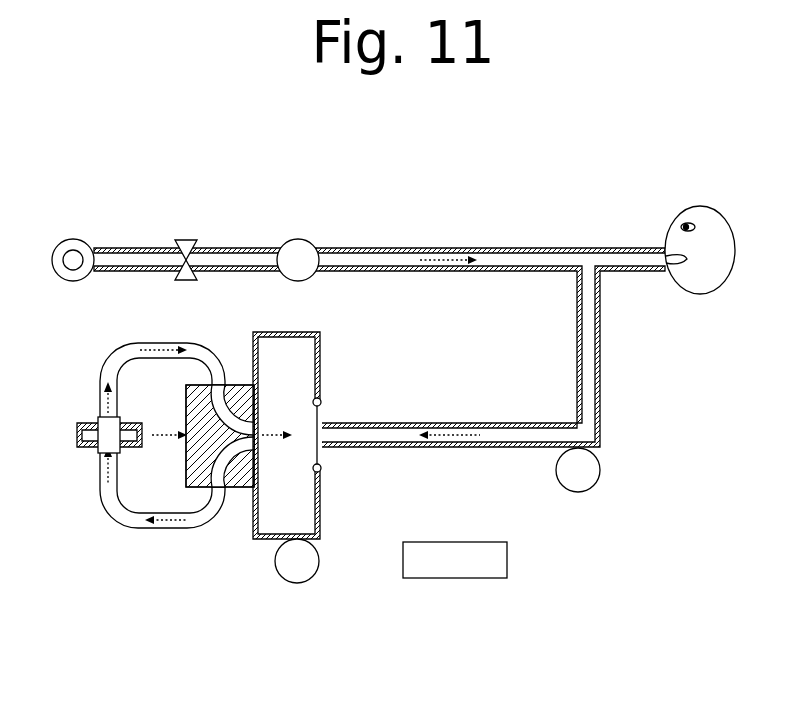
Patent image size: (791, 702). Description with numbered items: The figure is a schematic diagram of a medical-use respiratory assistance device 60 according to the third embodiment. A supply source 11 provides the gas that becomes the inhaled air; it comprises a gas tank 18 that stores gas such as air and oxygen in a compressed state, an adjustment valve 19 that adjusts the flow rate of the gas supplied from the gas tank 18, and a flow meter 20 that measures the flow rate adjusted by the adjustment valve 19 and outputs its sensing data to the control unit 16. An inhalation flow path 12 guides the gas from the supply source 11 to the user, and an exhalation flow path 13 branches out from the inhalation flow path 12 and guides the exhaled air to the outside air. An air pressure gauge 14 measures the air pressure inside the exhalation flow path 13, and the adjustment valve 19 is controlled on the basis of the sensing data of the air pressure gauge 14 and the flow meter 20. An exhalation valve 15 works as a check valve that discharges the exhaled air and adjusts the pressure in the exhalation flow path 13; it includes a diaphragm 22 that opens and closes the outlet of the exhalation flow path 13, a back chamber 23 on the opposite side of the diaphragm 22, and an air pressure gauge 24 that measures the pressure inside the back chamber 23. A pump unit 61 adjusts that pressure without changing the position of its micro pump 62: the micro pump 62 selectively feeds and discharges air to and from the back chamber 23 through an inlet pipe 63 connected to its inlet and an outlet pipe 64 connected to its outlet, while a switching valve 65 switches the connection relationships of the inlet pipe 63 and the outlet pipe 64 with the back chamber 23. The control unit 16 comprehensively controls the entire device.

The supply source 11 is at (242, 206).
The inhalation flow path 12 is at (540, 247).
The exhalation flow path 13 is at (537, 423).
The air pressure gauge 14 is at (578, 492).
The exhalation valve 15 is at (309, 327).
The control unit 16 is at (453, 541).
The gas tank 18 is at (73, 239).
The adjustment valve 19 is at (185, 240).
The flow meter 20 is at (297, 239).
The diaphragm 22 is at (320, 458).
The back chamber 23 is at (321, 505).
The air pressure gauge 24 is at (296, 583).
The respiratory assistance device 60 is at (628, 186).
The pump unit 61 is at (95, 343).
The micro pump 62 is at (130, 423).
The inlet pipe 63 is at (163, 513).
The outlet pipe 64 is at (163, 343).
The switching valve 65 is at (233, 385).